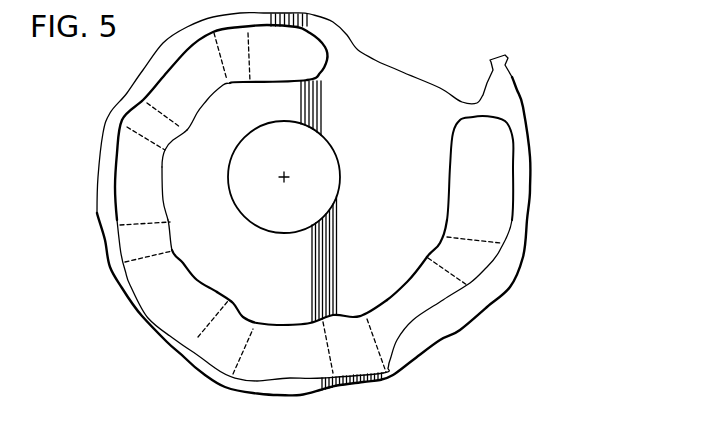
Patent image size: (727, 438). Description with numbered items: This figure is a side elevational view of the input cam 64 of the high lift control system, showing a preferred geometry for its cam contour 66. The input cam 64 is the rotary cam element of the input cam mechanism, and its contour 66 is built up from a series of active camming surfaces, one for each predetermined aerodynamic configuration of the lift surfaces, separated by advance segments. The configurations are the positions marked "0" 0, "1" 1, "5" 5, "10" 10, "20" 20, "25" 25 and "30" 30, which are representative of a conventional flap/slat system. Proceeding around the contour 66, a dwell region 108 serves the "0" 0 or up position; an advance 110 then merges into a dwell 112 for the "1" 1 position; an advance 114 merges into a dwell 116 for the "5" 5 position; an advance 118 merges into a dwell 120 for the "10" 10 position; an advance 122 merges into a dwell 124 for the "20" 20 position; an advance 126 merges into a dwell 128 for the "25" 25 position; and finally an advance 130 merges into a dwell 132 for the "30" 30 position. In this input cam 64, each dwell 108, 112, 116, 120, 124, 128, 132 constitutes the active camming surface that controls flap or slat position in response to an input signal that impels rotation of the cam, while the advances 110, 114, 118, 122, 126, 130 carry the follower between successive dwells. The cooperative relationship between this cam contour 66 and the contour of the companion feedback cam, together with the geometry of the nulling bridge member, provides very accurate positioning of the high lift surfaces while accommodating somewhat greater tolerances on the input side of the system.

The "0" position 0 is at (483, 184).
The "1" position 1 is at (447, 296).
The "5" position 5 is at (333, 346).
The "10" position 10 is at (250, 300).
The "20" position 20 is at (206, 143).
The "25" position 25 is at (214, 64).
The "30" position 30 is at (286, 58).
The input cam 64 is at (508, 101).
The cam contour 66 is at (520, 185).
The dwell region 108 is at (458, 186).
The advance 110 is at (438, 247).
The dwell 112 is at (408, 288).
The advance 114 is at (344, 328).
The dwell 116 is at (263, 327).
The advance 118 is at (232, 315).
The dwell 120 is at (182, 272).
The advance 122 is at (170, 234).
The dwell 124 is at (162, 198).
The advance 126 is at (172, 142).
The dwell 128 is at (195, 103).
The advance 130 is at (242, 84).
The dwell 132 is at (318, 68).